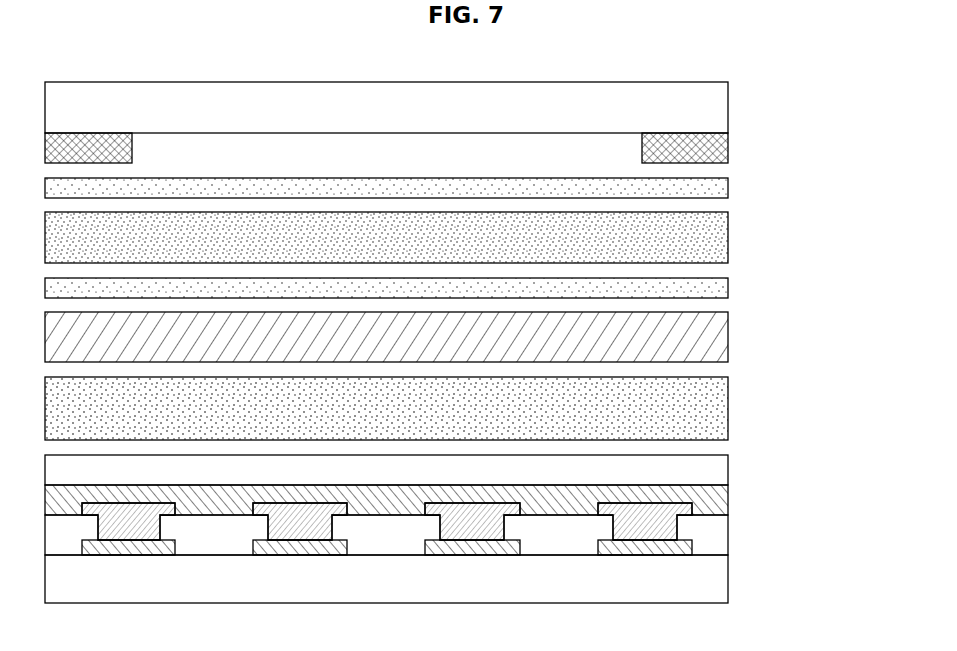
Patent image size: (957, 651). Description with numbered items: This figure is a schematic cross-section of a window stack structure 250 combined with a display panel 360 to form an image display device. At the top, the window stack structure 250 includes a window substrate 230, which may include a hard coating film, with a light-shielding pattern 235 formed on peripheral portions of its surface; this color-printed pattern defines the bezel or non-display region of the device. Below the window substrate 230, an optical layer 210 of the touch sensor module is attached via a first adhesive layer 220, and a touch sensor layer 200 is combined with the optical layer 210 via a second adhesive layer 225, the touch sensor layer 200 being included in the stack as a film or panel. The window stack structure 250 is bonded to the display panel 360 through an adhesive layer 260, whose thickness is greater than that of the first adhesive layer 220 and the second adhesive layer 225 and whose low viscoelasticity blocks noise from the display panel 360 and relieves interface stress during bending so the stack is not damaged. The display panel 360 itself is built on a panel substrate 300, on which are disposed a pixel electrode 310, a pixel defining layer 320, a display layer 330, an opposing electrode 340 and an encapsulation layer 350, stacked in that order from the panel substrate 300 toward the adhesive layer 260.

The window substrate 230 is at (722, 110).
The light-shielding pattern 235 is at (722, 147).
The first adhesive layer 220 is at (722, 186).
The optical layer 210 is at (722, 236).
The second adhesive layer 225 is at (722, 288).
The touch sensor layer 200 is at (430, 337).
The window stack structure 250 is at (461, 222).
The adhesive layer 260 is at (722, 408).
The encapsulation layer 350 is at (720, 473).
The opposing electrode 340 is at (720, 497).
The display layer 330 is at (660, 503).
The pixel defining layer 320 is at (722, 527).
The pixel electrode 310 is at (692, 543).
The panel substrate 300 is at (430, 579).
The display panel 360 is at (461, 519).